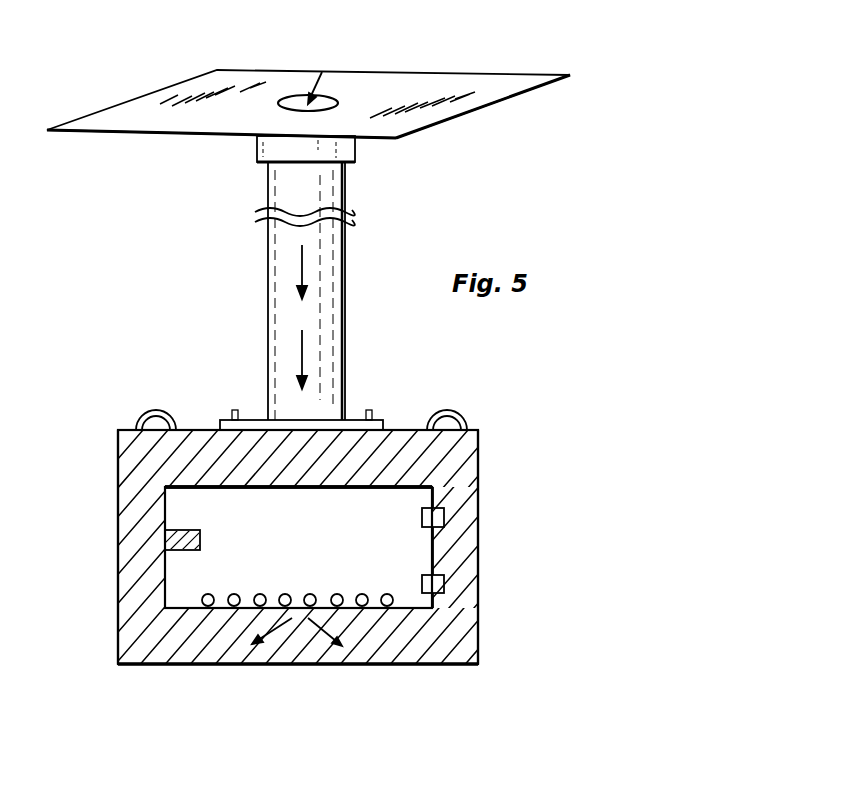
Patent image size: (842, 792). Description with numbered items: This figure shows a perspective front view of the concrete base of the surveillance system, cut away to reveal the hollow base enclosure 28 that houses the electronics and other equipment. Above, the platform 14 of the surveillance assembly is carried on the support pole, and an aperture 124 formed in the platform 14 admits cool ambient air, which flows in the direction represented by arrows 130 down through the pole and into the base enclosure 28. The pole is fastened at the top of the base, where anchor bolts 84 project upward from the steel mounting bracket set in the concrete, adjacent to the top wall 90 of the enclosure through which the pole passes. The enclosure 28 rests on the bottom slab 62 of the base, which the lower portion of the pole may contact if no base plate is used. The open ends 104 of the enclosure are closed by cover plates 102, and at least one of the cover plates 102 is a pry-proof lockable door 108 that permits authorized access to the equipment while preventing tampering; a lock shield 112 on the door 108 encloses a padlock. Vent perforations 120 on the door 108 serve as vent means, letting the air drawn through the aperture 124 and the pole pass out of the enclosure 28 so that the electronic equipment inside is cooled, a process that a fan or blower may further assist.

The platform 14 is at (158, 92).
The aperture 124 is at (287, 98).
The arrows 130 is at (368, 55).
The anchor bolts 84 is at (369, 410).
The top wall 90 is at (462, 421).
The cover plates 102 is at (445, 486).
The base enclosure 28 is at (100, 543).
The lockable door 108 is at (262, 489).
The lock shield 112 is at (176, 553).
The open ends 104 is at (478, 570).
The bottom slab 62 is at (477, 661).
The vent perforations 120 is at (399, 610).